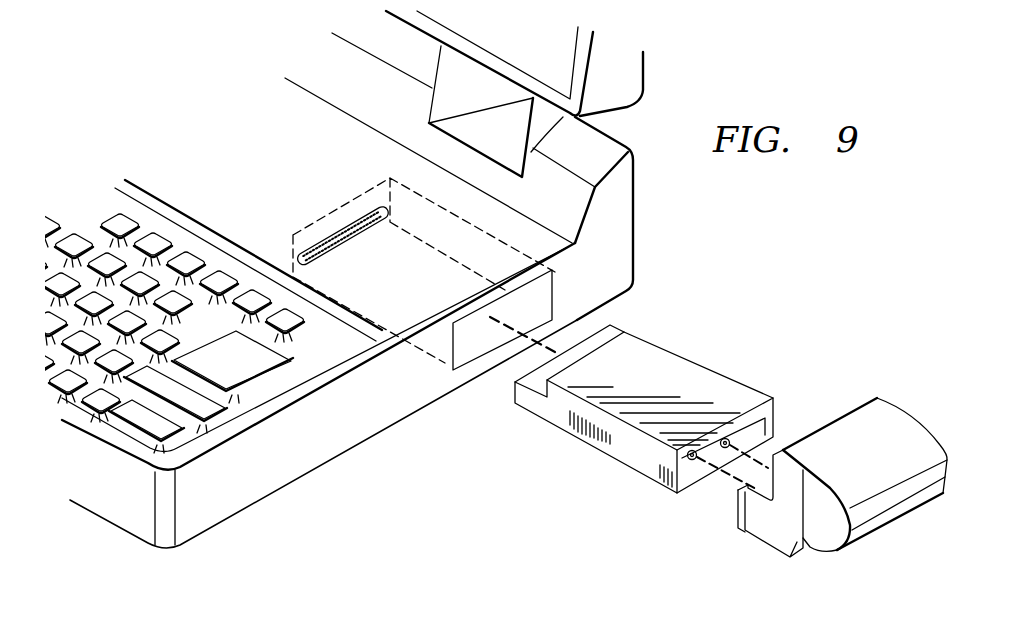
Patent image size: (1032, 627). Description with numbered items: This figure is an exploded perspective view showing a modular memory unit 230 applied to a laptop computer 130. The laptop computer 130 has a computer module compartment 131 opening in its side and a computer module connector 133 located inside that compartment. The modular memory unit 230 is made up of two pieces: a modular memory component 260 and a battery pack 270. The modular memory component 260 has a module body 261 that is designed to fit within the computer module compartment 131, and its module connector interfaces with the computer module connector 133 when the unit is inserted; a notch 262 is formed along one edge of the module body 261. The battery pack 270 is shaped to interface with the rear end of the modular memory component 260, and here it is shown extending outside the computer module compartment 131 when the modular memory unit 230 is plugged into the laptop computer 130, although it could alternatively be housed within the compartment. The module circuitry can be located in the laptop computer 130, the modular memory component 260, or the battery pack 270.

The laptop computer 130 is at (200, 101).
The computer module compartment 131 is at (554, 292).
The computer module connector 133 is at (334, 217).
The modular memory unit 230 is at (631, 513).
The modular memory component 260 is at (605, 420).
The module body 261 is at (653, 340).
The notch 262 is at (503, 393).
The battery pack 270 is at (910, 392).